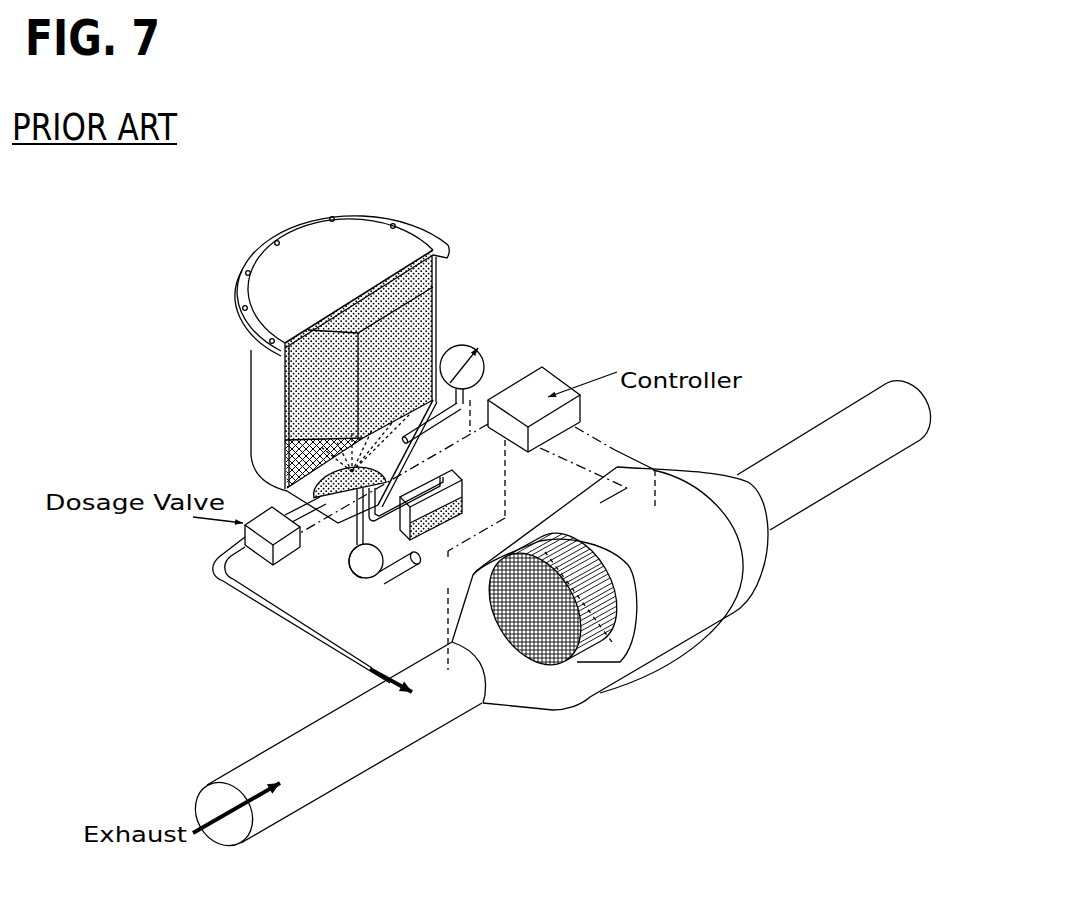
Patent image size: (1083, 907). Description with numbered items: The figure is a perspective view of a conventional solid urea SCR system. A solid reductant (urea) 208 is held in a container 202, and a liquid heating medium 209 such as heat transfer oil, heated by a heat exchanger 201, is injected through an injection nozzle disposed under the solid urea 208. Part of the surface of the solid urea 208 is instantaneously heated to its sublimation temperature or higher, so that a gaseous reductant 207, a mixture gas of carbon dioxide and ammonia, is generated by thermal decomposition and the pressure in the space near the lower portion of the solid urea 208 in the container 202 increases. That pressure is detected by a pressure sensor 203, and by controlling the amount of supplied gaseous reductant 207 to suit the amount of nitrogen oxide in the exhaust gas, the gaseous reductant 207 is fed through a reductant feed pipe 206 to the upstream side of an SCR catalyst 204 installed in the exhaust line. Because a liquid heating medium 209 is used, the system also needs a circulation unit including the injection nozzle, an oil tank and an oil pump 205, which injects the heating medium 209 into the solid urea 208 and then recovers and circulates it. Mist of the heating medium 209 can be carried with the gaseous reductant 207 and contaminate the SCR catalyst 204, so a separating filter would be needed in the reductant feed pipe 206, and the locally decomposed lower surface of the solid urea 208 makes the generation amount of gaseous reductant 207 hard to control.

The heat exchanger 201 is at (347, 571).
The container 202 is at (330, 258).
The pressure sensor 203 is at (471, 343).
The SCR catalyst 204 is at (617, 626).
The oil pump 205 is at (403, 567).
The reductant feed pipe 206 is at (301, 635).
The gaseous reductant 207 is at (371, 680).
The solid reductant (urea) 208 is at (317, 372).
The liquid heating medium 209 is at (298, 470).